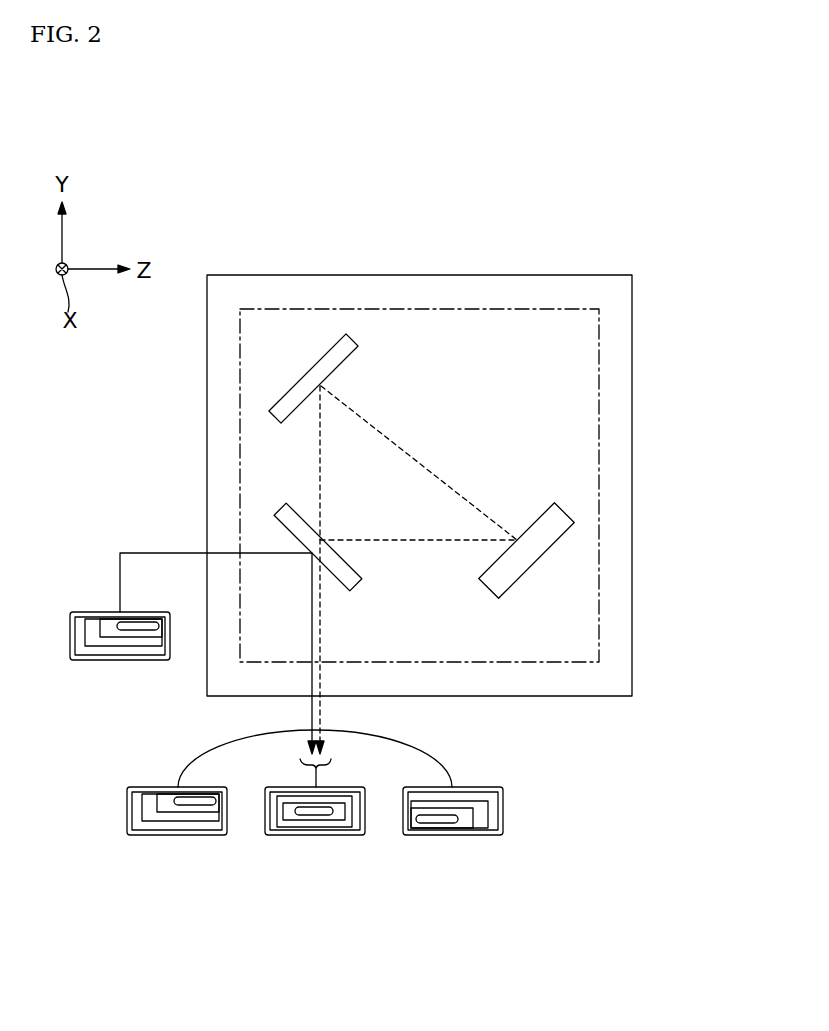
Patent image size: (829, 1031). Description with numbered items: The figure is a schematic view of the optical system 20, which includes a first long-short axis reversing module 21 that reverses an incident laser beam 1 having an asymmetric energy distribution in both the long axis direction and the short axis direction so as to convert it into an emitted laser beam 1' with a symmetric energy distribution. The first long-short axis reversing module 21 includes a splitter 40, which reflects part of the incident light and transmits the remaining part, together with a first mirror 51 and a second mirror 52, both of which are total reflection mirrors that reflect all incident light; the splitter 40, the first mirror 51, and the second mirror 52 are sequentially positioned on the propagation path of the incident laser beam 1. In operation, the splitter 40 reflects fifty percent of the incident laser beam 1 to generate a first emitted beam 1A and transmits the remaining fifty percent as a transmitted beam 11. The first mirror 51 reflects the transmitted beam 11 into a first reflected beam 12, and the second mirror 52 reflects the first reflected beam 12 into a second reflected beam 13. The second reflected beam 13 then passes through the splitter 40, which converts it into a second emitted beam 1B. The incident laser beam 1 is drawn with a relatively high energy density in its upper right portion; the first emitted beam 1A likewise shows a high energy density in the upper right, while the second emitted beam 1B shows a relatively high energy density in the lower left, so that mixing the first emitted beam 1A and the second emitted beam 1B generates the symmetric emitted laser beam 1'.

The incident laser beam 1 is at (185, 652).
The first emitted beam 1A is at (145, 787).
The emitted laser beam 1' is at (316, 789).
The second emitted beam 1B is at (492, 787).
The transmitted beam 11 is at (442, 540).
The first reflected beam 12 is at (403, 448).
The second reflected beam 13 is at (318, 457).
The optical system 20 is at (633, 340).
The first long-short axis reversing module 21 is at (600, 395).
The splitter 40 is at (273, 518).
The first total reflection mirror 51 is at (562, 528).
The second total reflection mirror 52 is at (277, 410).